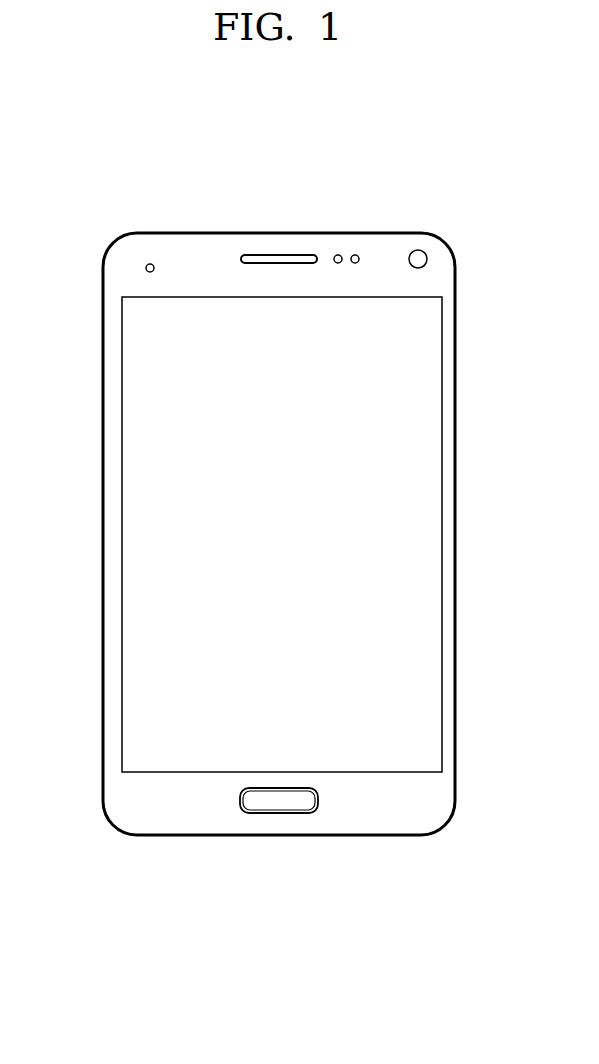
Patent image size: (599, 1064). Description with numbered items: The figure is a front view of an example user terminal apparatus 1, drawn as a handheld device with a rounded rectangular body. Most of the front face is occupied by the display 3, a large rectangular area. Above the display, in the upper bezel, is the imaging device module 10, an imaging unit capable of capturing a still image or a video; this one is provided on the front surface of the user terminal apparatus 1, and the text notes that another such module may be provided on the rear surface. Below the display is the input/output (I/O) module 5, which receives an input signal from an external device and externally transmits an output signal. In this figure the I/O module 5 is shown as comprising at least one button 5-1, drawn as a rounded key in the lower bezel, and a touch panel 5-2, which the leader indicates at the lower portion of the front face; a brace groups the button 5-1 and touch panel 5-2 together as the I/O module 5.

The user terminal apparatus 1 is at (83, 218).
The imaging device module 10 is at (418, 250).
The display 3 is at (425, 512).
The button 5-1 is at (278, 803).
The touch panel 5-2 is at (388, 745).
The input/output (I/O) module 5 is at (418, 895).